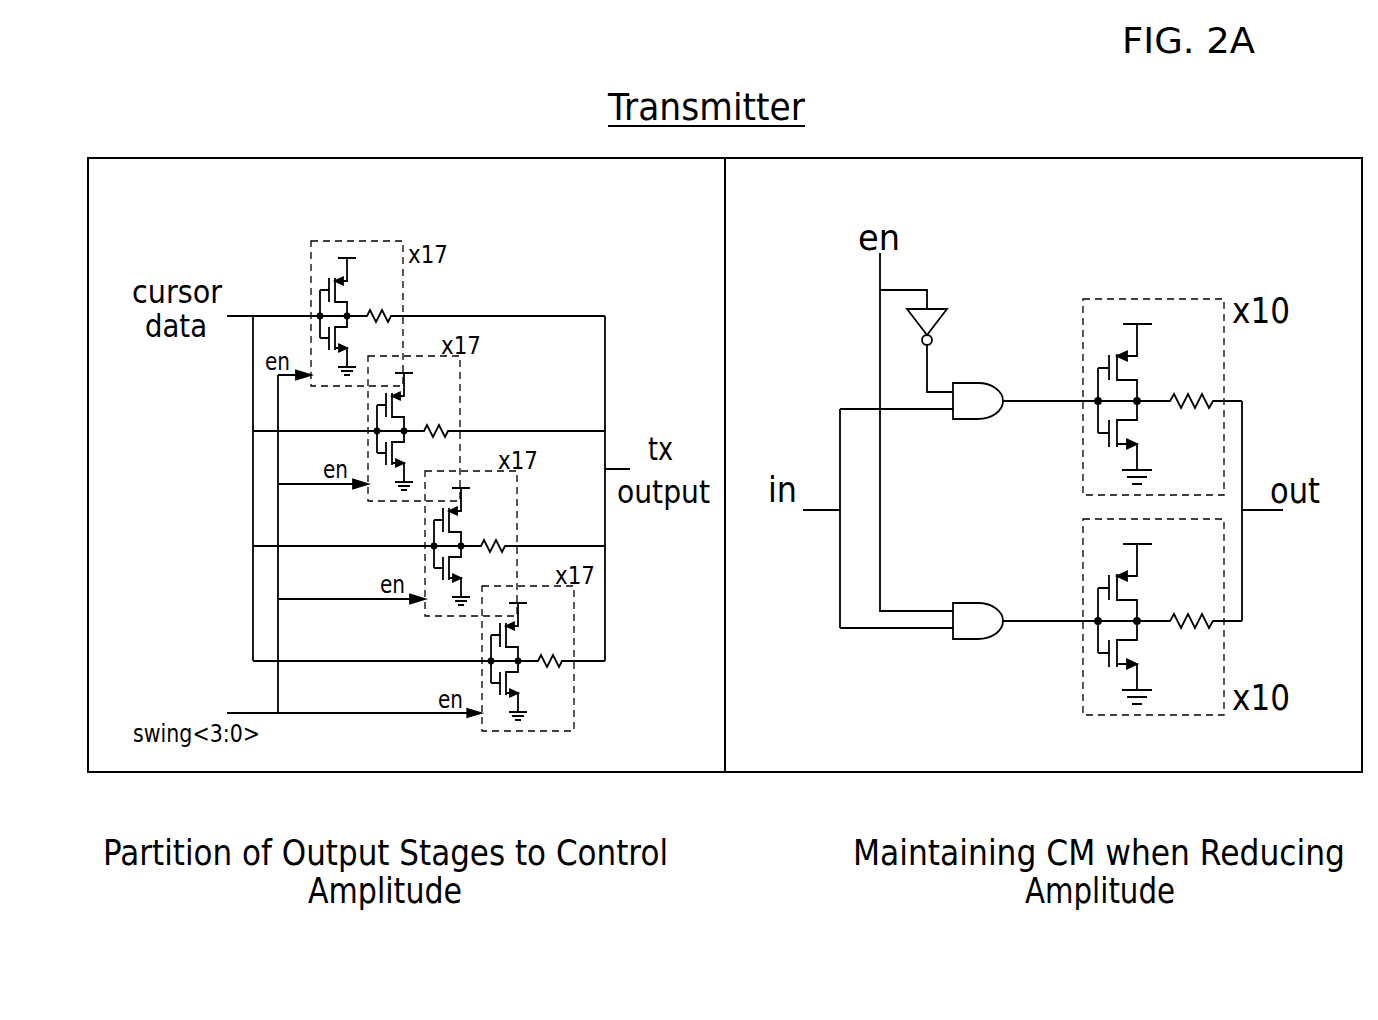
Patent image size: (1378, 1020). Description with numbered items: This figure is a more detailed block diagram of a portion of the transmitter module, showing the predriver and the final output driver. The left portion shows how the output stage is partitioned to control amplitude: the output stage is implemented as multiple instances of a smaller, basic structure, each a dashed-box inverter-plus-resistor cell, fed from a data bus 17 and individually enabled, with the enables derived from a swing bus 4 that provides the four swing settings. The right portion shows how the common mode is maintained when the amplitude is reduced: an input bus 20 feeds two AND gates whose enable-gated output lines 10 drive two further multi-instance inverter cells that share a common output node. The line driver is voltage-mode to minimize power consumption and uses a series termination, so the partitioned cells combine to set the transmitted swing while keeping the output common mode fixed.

The enable/output stage signal bus 10 is at (918, 402).
The cursor data bus 17 is at (237, 321).
The input signal bus 20 is at (828, 502).
The swing control bus 4 is at (243, 722).